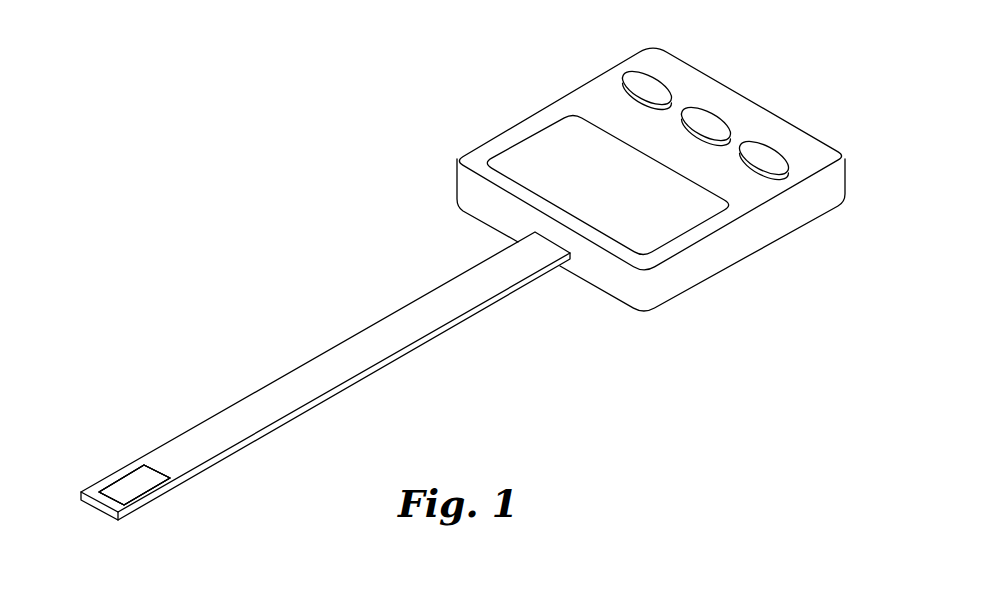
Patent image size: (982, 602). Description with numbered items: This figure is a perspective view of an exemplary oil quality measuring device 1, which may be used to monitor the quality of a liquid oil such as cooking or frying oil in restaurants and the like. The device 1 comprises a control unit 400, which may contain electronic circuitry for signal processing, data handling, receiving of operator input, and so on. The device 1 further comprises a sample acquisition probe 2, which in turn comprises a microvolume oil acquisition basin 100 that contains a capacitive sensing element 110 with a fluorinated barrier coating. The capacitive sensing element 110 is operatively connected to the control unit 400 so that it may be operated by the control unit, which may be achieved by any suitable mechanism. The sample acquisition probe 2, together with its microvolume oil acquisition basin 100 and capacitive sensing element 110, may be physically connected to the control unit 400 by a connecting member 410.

The oil quality measuring device 1 is at (418, 112).
The sample acquisition probe 2 is at (141, 463).
The microvolume oil acquisition basin 100 is at (131, 486).
The capacitive sensing element 110 is at (117, 490).
The control unit 400 is at (672, 62).
The connecting member 410 is at (282, 392).